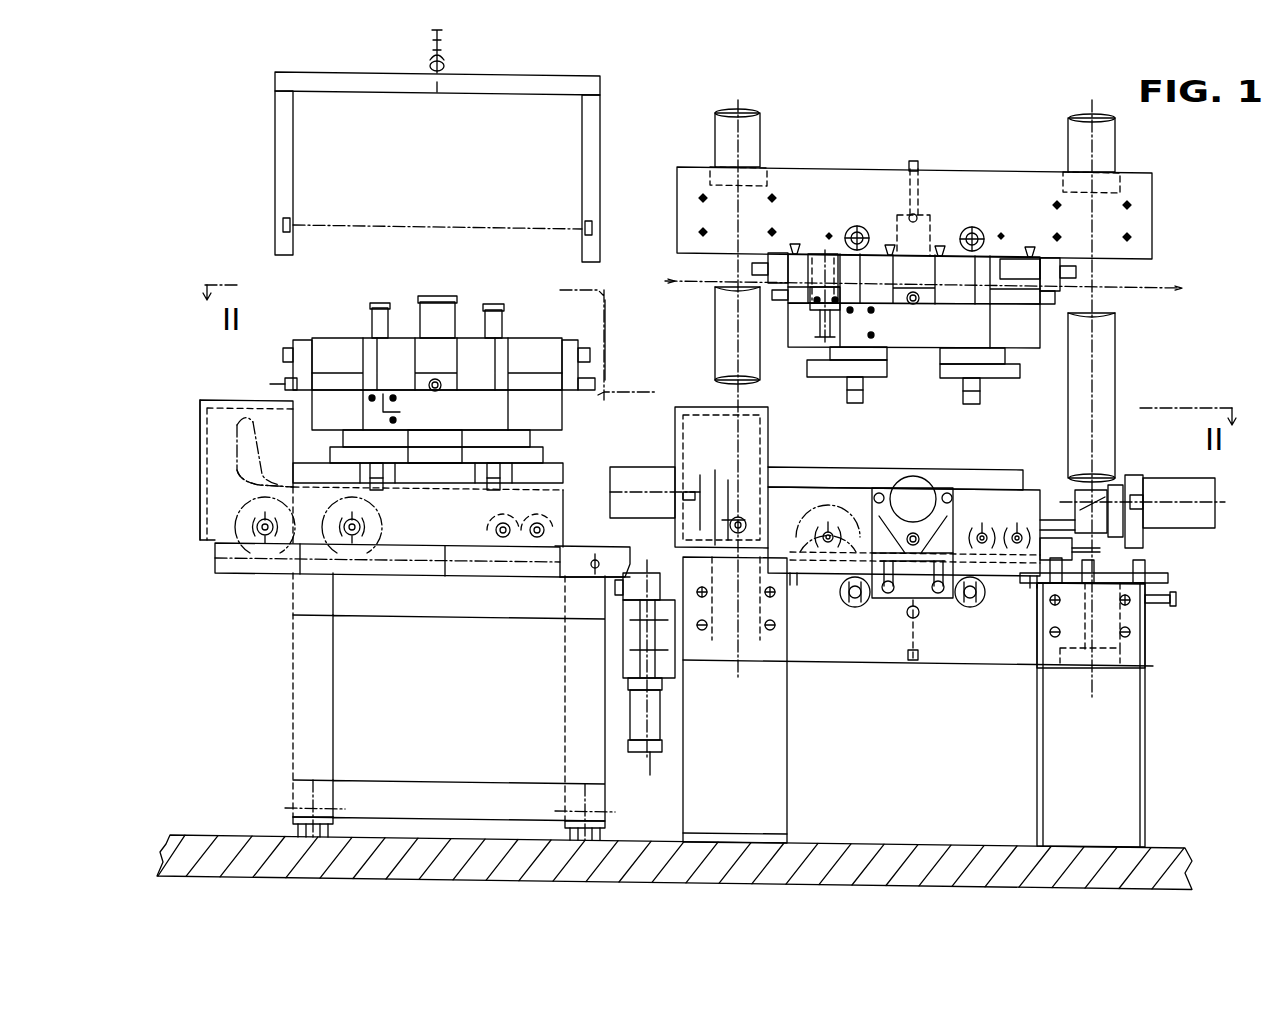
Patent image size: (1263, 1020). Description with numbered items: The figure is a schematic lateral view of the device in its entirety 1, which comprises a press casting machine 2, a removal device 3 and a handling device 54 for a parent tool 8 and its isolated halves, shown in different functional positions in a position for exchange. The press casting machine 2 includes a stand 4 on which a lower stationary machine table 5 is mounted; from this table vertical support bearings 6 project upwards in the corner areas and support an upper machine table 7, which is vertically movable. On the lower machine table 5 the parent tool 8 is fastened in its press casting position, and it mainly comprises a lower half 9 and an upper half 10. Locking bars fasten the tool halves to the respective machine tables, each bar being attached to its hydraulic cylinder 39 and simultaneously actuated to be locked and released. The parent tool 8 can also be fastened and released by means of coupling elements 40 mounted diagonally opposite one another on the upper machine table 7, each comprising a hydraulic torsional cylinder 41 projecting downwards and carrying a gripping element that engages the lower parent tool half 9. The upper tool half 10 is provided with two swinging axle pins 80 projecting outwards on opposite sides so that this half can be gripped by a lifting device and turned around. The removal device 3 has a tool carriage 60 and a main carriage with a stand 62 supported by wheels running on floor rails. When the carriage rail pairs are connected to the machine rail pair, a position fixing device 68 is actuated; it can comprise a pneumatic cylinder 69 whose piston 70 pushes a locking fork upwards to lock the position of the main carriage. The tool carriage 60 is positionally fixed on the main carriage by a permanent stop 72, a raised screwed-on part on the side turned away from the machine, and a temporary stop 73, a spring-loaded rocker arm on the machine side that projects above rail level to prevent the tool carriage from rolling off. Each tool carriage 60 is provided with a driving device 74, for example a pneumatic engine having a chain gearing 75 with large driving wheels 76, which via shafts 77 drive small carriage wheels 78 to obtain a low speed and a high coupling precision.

The device in its entirety 1 is at (682, 392).
The press casting machine 2 is at (826, 145).
The removal device 3 is at (205, 400).
The stand 4 is at (1140, 770).
The lower stationary machine table 5 is at (1150, 650).
The vertical support bearings 6 is at (722, 130).
The upper machine table 7 is at (1152, 195).
The parent tool 8 is at (352, 338).
The lower parent tool half 9 is at (540, 408).
The upper parent tool half 10 is at (330, 345).
The hydraulic cylinder 39 is at (860, 232).
The coupling element 40 is at (823, 322).
The hydraulic torsional cylinder 41 is at (815, 255).
The handling device 54 is at (275, 104).
The tool carriage 60 is at (202, 448).
The stand 62 is at (310, 680).
The position fixing device 68 is at (646, 746).
The pneumatic cylinder 69 is at (640, 715).
The piston 70 is at (628, 660).
The permanent stop 72 is at (230, 562).
The temporary stop 73 is at (570, 560).
The driving device 74 is at (290, 425).
The chain gearing 75 is at (235, 488).
The large driving wheels 76 is at (445, 562).
The shafts 77 is at (270, 552).
The small carriage wheels 78 is at (258, 527).
The swinging axle pins 80 is at (283, 352).